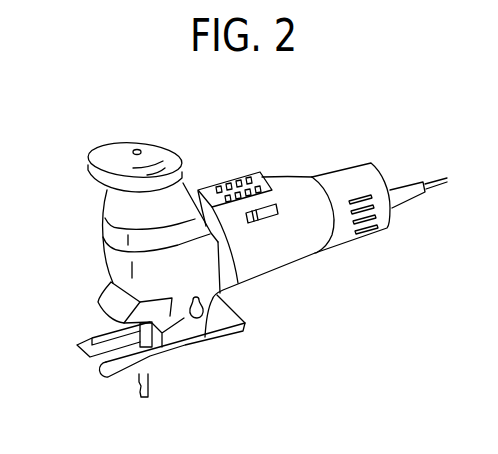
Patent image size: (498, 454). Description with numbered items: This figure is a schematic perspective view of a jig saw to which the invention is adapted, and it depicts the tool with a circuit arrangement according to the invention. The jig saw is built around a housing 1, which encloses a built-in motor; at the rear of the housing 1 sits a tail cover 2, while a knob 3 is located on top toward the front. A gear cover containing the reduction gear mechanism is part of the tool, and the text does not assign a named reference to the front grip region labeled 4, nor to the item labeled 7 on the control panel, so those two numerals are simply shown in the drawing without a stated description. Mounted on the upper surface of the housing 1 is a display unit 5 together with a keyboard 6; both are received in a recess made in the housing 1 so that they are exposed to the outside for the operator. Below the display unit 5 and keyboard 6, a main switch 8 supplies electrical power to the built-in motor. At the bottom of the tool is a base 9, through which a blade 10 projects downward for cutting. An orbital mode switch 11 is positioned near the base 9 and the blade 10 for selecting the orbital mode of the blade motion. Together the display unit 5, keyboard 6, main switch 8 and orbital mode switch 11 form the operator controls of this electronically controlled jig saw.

The housing 1 is at (315, 243).
The tail cover 2 is at (342, 175).
The knob 3 is at (108, 152).
The handle grip 4 is at (107, 262).
The display unit 5 is at (197, 193).
The keyboard 6 is at (227, 180).
The indicator 7 is at (250, 177).
The main switch 8 is at (258, 224).
The base 9 is at (82, 354).
The blade 10 is at (147, 398).
The orbital mode switch 11 is at (203, 318).